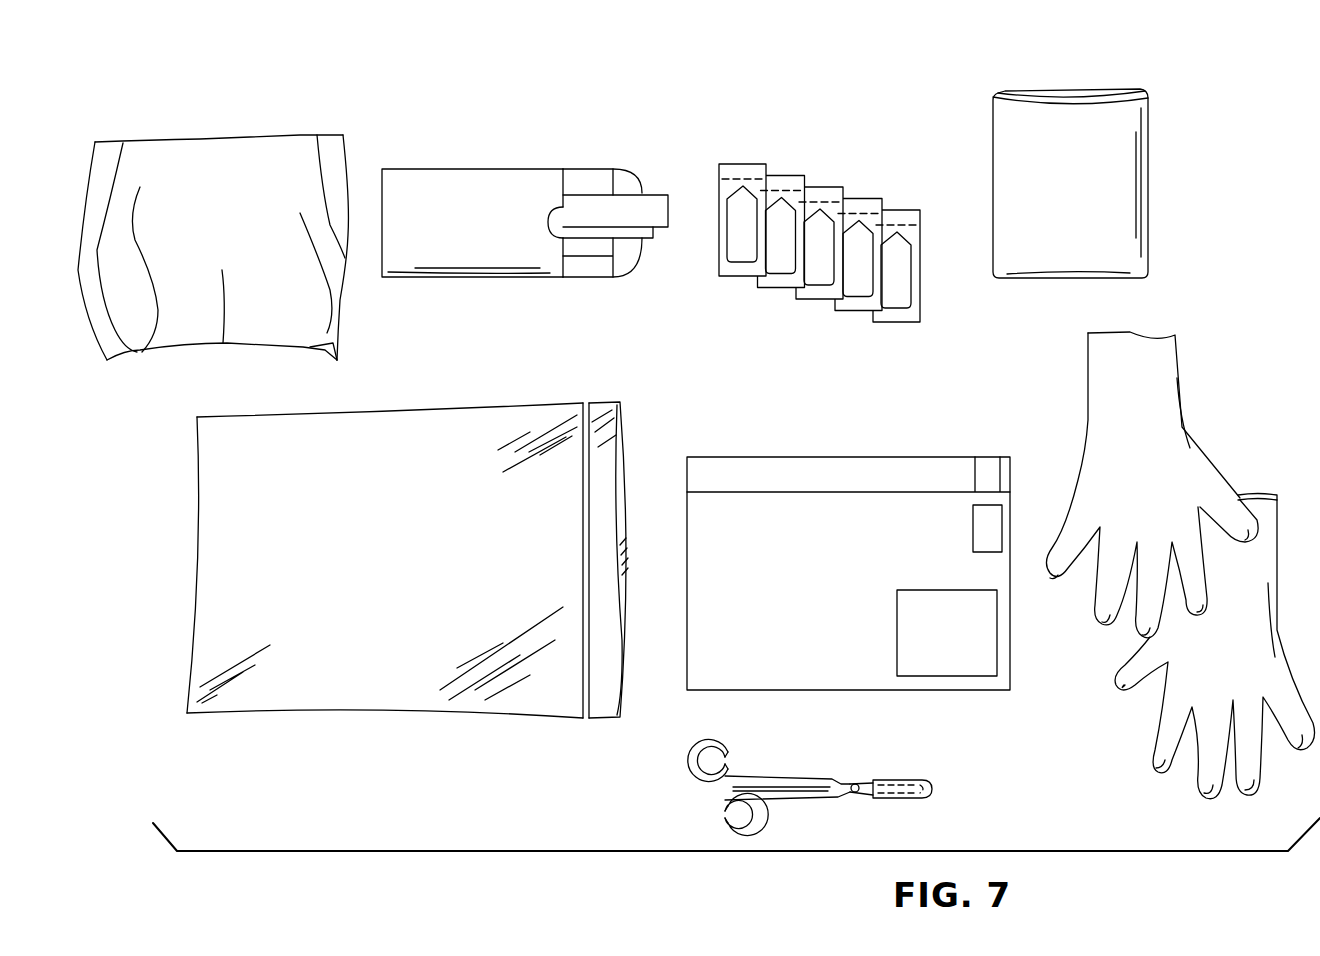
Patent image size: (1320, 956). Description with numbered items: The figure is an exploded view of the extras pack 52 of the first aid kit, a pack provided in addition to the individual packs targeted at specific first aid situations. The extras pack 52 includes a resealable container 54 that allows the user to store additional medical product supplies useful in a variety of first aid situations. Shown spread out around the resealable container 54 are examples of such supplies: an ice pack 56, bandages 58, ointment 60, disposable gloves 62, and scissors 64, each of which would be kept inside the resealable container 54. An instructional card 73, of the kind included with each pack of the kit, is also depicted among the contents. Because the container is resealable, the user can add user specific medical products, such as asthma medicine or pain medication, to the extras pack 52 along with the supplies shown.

The extras pack 52 is at (182, 530).
The resealable container 54 is at (428, 417).
The ice pack 56 is at (278, 147).
The bandages 58 is at (480, 182).
The ointment 60 is at (823, 183).
The disposable gloves 62 is at (1194, 438).
The scissors 64 is at (1125, 172).
The instructional card 73 is at (722, 457).